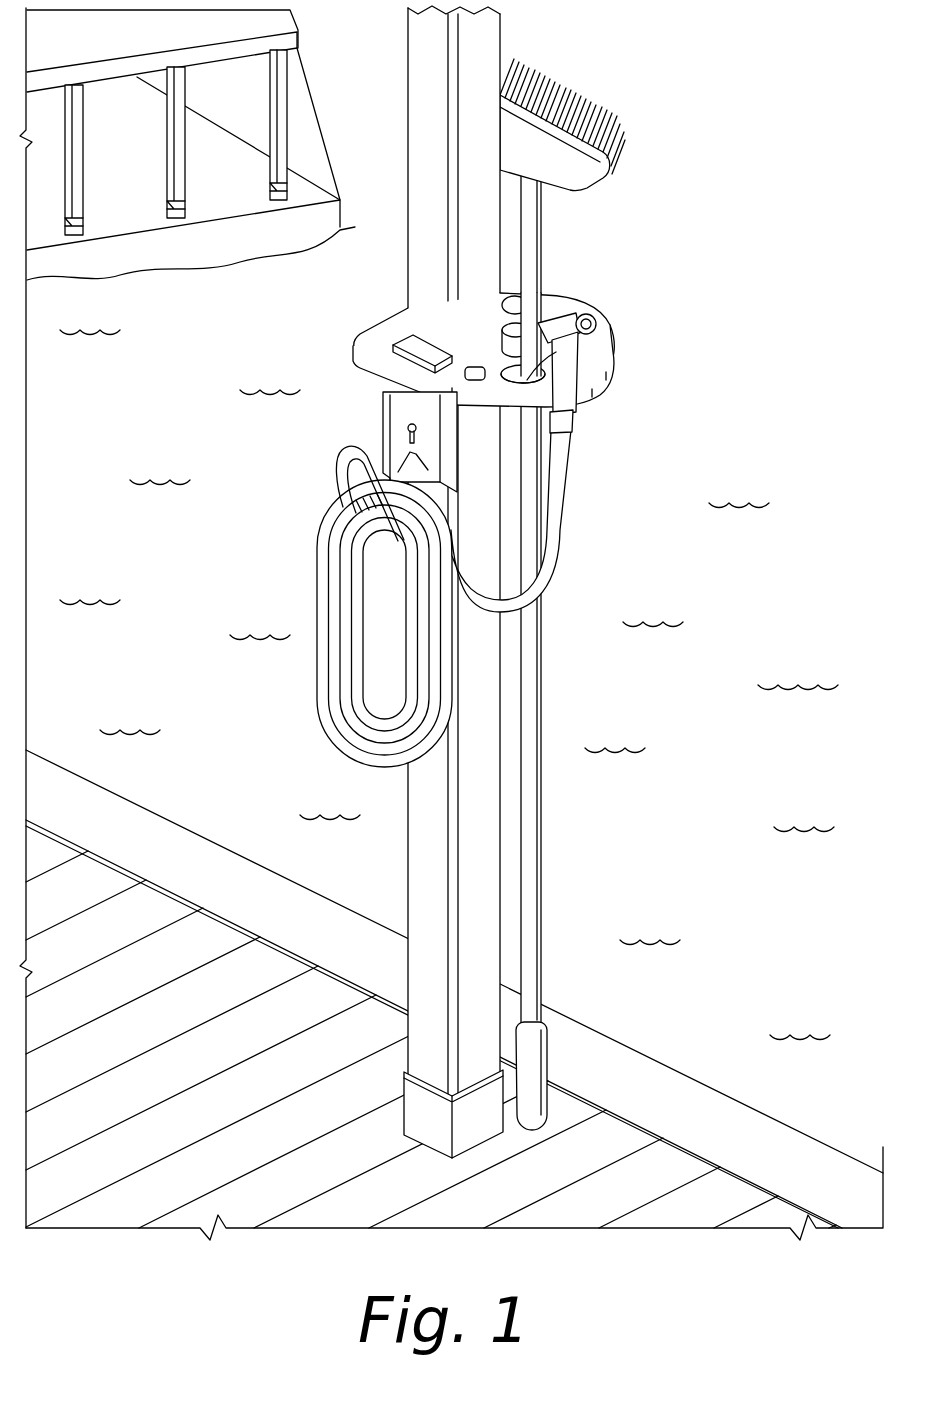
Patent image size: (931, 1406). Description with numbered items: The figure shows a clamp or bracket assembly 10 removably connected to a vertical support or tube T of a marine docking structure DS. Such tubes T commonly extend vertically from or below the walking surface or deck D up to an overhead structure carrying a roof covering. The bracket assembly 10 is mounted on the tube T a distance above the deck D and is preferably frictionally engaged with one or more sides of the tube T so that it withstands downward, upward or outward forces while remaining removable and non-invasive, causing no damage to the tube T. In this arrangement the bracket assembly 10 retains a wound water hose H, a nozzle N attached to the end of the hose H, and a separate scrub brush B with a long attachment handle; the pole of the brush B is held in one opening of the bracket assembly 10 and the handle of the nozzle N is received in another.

The bracket assembly 10 is at (352, 320).
The tube T is at (430, 108).
The marine docking structure DS is at (156, 272).
The deck D is at (143, 922).
The hose H is at (306, 574).
The brush B is at (545, 854).
The nozzle N is at (713, 368).